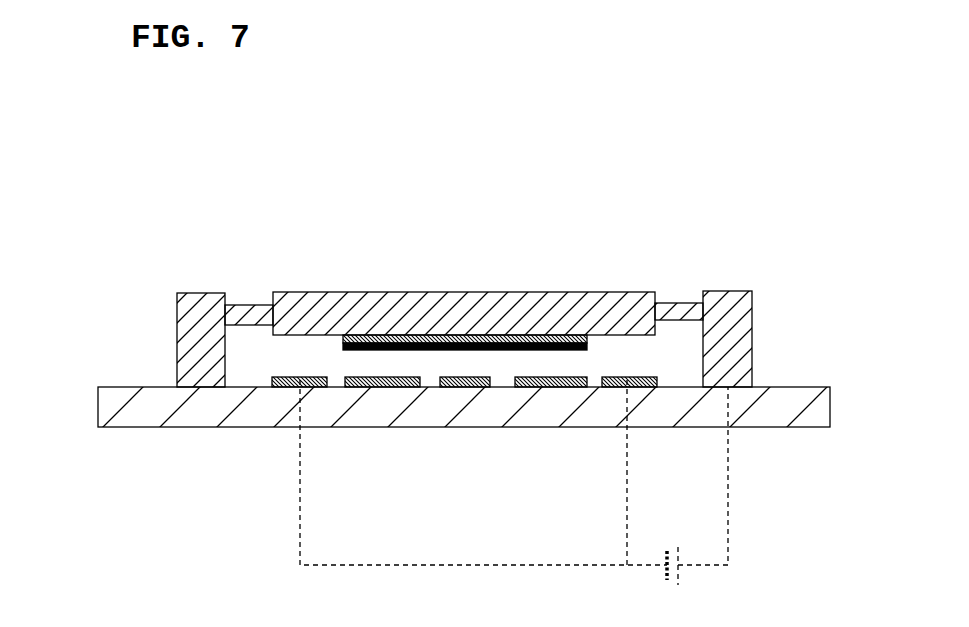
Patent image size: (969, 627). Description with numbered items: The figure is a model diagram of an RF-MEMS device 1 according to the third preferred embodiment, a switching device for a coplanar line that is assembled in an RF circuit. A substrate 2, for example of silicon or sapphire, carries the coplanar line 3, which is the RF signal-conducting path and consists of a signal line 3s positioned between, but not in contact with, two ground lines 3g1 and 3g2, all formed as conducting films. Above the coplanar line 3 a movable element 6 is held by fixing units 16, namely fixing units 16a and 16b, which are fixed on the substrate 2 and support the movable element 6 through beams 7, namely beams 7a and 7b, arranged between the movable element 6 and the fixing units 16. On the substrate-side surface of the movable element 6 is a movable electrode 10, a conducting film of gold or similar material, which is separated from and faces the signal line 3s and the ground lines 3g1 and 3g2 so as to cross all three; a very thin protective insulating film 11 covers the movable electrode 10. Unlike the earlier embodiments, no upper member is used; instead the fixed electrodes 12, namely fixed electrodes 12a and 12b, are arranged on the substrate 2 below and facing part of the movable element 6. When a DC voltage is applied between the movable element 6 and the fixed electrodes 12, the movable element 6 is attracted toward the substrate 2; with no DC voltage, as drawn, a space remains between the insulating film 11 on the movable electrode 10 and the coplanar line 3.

The RF-MEMS device 1 is at (355, 203).
The substrate 2 is at (831, 402).
The coplanar line 3 is at (463, 465).
The ground line 3g1 is at (370, 387).
The signal line 3s is at (463, 387).
The ground line 3g2 is at (551, 436).
The movable element 6 is at (455, 292).
The beams 7 is at (459, 274).
The beam 7a is at (236, 305).
The beam 7b is at (682, 303).
The movable electrode 10 is at (343, 340).
The insulating film 11 is at (540, 349).
The fixed electrodes 12 is at (463, 426).
The fixed electrode 12a is at (273, 386).
The fixed electrode 12b is at (635, 386).
The fixing units 16 is at (467, 339).
The fixing unit 16a is at (177, 330).
The fixing unit 16b is at (752, 327).